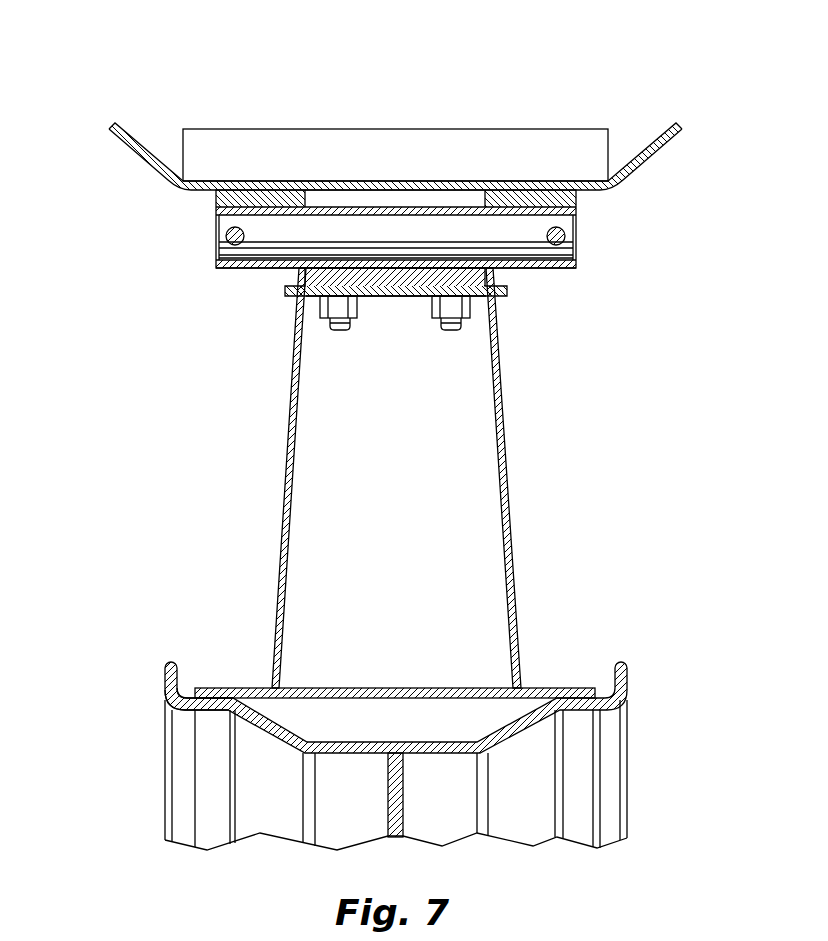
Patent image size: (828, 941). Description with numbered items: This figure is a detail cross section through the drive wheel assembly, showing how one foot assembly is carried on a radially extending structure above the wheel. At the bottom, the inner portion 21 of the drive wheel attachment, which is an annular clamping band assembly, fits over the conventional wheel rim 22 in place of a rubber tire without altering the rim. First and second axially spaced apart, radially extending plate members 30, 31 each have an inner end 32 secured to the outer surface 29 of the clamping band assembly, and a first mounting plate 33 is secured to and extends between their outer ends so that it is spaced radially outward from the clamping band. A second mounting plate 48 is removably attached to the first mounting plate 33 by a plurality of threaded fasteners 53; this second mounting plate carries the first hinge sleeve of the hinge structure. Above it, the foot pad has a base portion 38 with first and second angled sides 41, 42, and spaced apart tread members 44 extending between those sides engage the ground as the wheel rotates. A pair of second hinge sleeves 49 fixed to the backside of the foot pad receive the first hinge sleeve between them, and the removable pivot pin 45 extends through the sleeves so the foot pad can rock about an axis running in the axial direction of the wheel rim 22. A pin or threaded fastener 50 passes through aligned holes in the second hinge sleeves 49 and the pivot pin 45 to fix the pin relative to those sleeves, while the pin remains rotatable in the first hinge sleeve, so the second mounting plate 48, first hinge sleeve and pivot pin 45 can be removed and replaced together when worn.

The inner portion 21 is at (398, 667).
The wheel rim 22 is at (207, 765).
The outer surface 29 is at (245, 695).
The first plate member 30 is at (402, 478).
The second plate member 31 is at (277, 513).
The inner end 32 is at (265, 688).
The first mounting plate 33 is at (383, 297).
The base portion 38 is at (282, 183).
The first angled side 41 is at (132, 138).
The second angled side 42 is at (655, 138).
The tread member 44 is at (445, 140).
The pivot pin 45 is at (518, 234).
The second mounting plate 48 is at (300, 275).
The second hinge sleeves 49 is at (226, 268).
The threaded fastener 50 is at (225, 236).
The threaded fasteners 53 is at (455, 330).